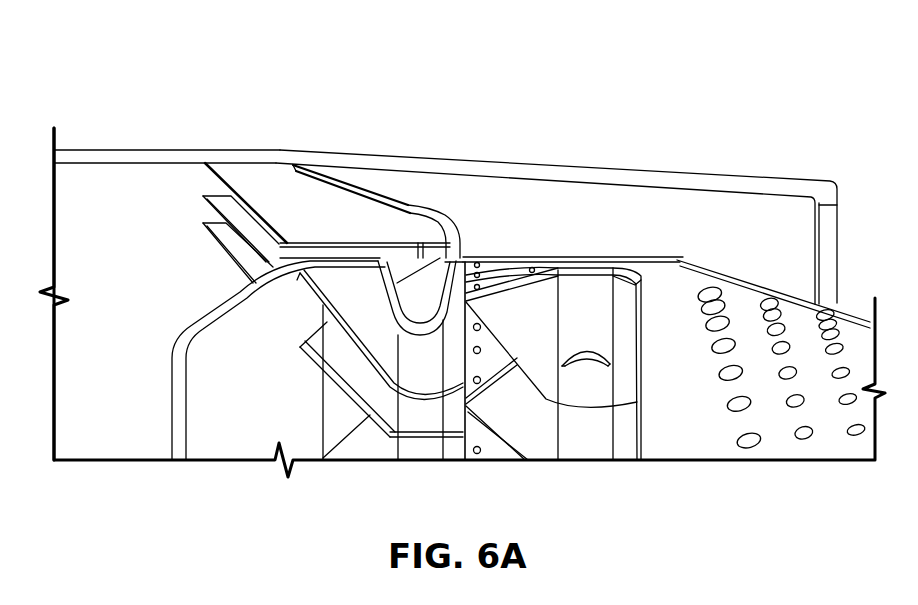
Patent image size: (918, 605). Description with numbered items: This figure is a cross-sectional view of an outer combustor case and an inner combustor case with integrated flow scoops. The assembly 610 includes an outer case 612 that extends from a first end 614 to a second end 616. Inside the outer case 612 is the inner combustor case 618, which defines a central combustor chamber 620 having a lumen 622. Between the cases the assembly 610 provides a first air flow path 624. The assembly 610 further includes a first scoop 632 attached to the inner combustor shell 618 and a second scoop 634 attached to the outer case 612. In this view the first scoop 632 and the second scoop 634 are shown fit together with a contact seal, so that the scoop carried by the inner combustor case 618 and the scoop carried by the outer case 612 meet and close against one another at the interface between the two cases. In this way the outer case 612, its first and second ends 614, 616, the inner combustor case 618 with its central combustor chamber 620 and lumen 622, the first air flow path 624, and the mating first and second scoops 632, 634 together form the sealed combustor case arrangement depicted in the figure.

The assembly 610 is at (230, 72).
The outer case 612 is at (410, 162).
The first end 614 is at (107, 162).
The second end 616 is at (740, 185).
The inner combustor case 618 is at (181, 338).
The central combustor chamber 620 is at (457, 347).
The lumen 622 is at (418, 247).
The first air flow path 624 is at (132, 203).
The first scoop 632 is at (456, 232).
The second scoop 634 is at (320, 207).